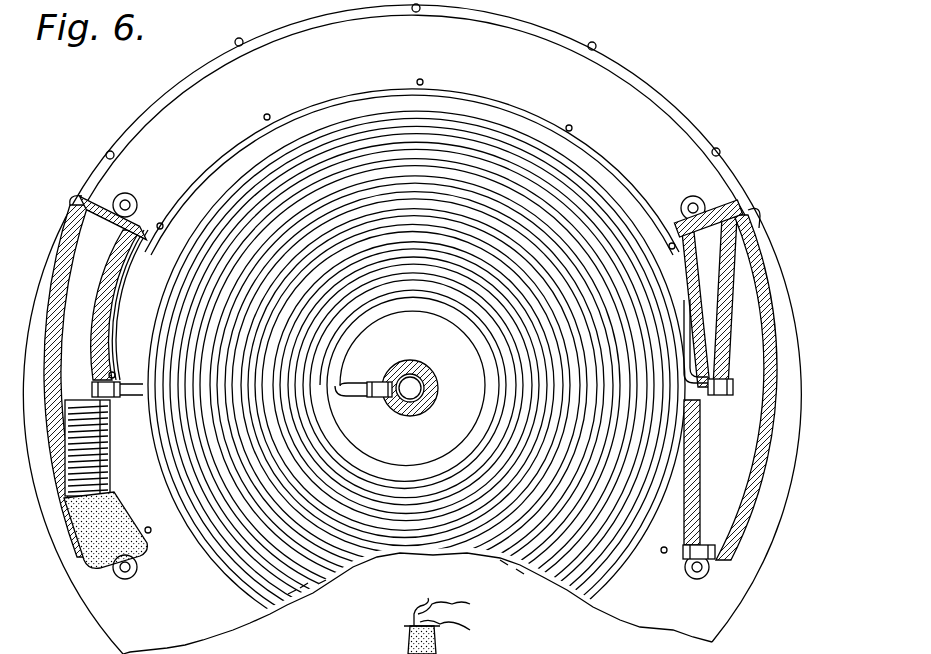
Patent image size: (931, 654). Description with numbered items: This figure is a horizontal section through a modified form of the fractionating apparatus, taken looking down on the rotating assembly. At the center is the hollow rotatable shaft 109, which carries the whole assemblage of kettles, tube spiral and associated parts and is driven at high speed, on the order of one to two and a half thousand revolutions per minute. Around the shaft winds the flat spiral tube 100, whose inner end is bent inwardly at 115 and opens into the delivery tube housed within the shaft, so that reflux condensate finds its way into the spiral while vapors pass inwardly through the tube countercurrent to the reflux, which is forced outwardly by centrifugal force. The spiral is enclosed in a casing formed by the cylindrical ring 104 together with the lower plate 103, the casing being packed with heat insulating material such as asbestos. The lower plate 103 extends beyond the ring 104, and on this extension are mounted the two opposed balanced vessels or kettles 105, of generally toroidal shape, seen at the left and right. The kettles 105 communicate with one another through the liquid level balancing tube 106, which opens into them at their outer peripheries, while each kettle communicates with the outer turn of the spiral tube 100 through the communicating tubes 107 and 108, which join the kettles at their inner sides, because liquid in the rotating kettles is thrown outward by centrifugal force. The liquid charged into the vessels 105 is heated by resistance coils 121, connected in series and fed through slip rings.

The flat spiral tube 100 is at (290, 578).
The lower plate 103 is at (115, 607).
The cylindrical ring 104 is at (621, 177).
The balanced vessel or kettle 105 is at (95, 272).
The liquid level balancing tube 106 is at (612, 68).
The communicating tube 107 is at (720, 384).
The communicating tube 108 is at (82, 407).
The hollow rotatable shaft 109 is at (423, 342).
The inner end of tube spiral 115 is at (380, 398).
The resistance coil 121 is at (143, 228).